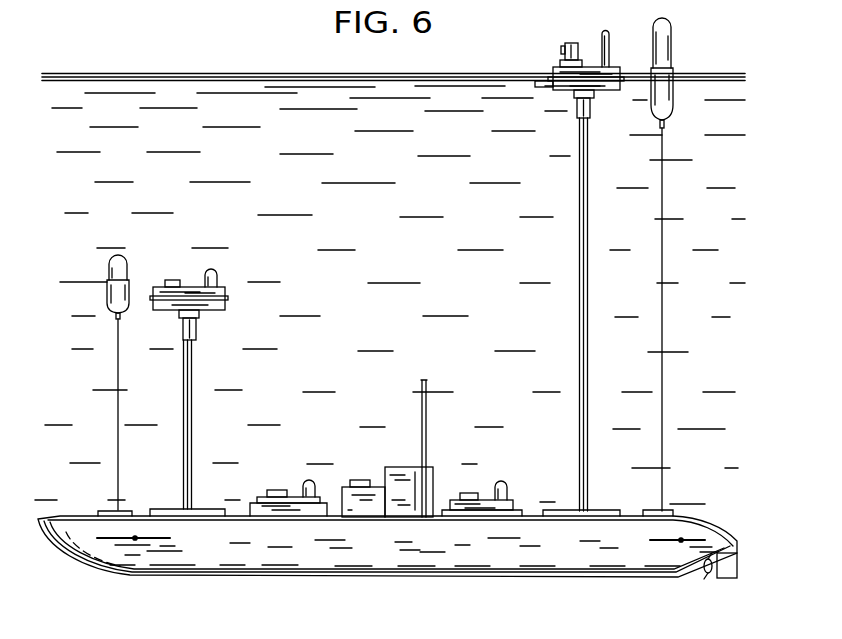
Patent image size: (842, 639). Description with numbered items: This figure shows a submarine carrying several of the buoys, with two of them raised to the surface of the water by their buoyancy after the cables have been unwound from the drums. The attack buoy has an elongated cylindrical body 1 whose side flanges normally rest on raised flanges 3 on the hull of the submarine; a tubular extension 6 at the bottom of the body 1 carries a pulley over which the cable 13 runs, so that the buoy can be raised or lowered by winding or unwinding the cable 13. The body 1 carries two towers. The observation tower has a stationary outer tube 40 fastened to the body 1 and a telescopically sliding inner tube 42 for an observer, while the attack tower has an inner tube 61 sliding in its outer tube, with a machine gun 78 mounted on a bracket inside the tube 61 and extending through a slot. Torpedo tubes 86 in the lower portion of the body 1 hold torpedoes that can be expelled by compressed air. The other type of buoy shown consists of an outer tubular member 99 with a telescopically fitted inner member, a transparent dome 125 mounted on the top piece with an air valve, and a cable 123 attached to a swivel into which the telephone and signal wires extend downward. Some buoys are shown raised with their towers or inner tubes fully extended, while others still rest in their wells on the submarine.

The elongated cylindrical body 1 is at (619, 73).
The raised flanges 3 is at (203, 509).
The tubular extension 6 is at (591, 109).
The cable 13 is at (593, 172).
The outer tube of observation tower 40 is at (215, 281).
The inner tube of observation tower 42 is at (609, 41).
The inner tube of attack tower 61 is at (574, 43).
The machine gun 78 is at (562, 48).
The torpedo tubes 86 is at (543, 80).
The outer tubular member 99 is at (675, 80).
The cable 123 is at (662, 188).
The dome 125 is at (671, 26).